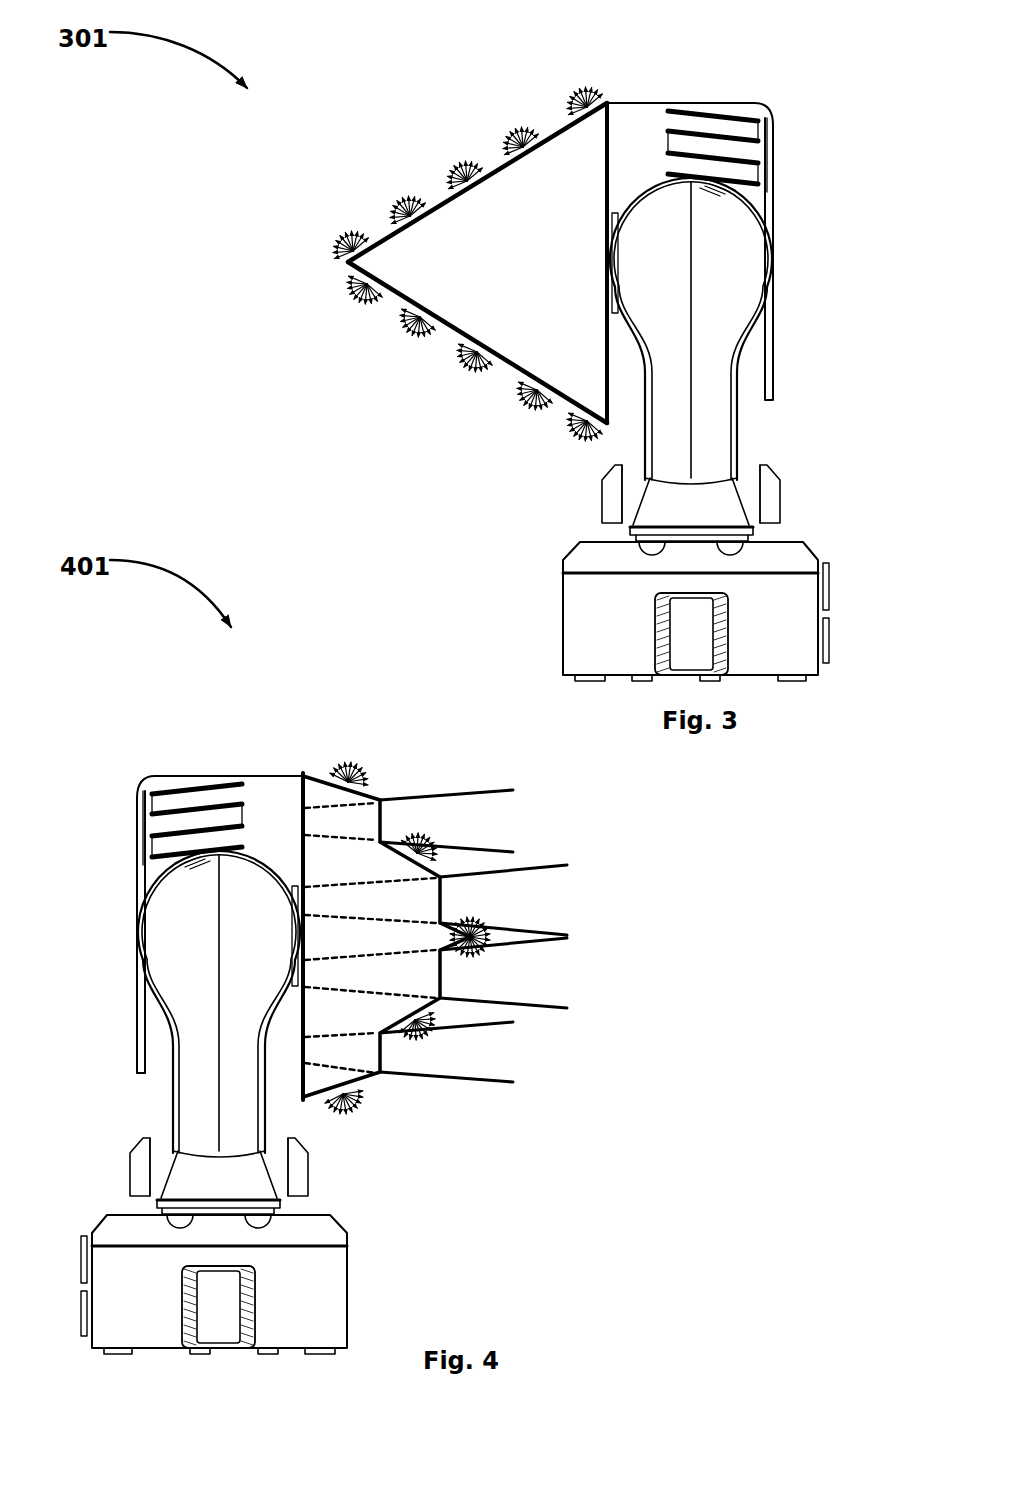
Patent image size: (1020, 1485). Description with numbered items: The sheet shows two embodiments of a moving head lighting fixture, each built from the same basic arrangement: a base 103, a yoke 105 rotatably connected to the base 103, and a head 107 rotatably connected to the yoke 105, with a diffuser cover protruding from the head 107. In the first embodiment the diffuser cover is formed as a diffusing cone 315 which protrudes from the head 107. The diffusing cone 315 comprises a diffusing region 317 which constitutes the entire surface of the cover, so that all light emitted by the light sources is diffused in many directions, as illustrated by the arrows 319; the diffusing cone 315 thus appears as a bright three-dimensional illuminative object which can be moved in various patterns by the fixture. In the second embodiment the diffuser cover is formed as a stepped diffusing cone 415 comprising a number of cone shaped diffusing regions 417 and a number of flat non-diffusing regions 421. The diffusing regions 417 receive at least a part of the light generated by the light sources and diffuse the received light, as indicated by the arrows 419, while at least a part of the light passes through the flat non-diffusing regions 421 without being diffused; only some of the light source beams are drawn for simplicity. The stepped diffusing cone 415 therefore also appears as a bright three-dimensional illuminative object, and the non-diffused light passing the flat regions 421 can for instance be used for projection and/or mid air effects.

In FIG. 3, the base 103 is at (522, 609).
In FIG. 4, the base 103 is at (388, 1261).
In FIG. 3, the yoke 105 is at (780, 256).
In FIG. 4, the yoke 105 is at (133, 942).
In FIG. 3, the head 107 is at (660, 92).
In FIG. 4, the head 107 is at (222, 757).
In FIG. 3, the diffusing cone 315 is at (370, 163).
In FIG. 3, the diffusing region 317 is at (450, 337).
In FIG. 3, the arrows 319 is at (550, 100).
In FIG. 4, the stepped diffusing cone 415 is at (323, 742).
In FIG. 4, the cone shaped diffusing regions 417 is at (473, 960).
In FIG. 4, the arrows 419 is at (367, 770).
In FIG. 4, the flat non-diffusing regions 421 is at (440, 900).